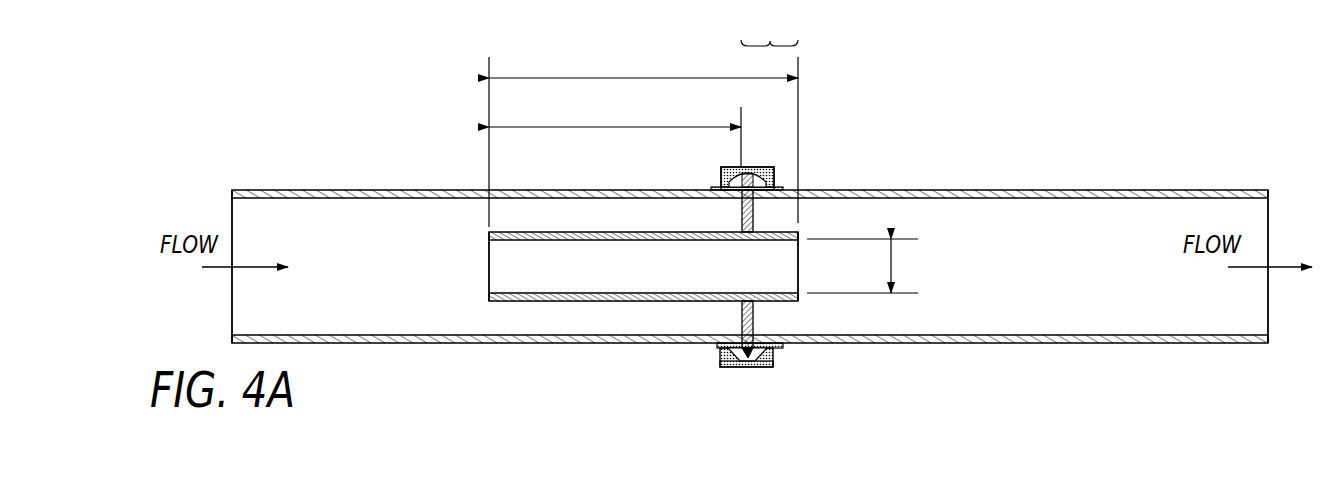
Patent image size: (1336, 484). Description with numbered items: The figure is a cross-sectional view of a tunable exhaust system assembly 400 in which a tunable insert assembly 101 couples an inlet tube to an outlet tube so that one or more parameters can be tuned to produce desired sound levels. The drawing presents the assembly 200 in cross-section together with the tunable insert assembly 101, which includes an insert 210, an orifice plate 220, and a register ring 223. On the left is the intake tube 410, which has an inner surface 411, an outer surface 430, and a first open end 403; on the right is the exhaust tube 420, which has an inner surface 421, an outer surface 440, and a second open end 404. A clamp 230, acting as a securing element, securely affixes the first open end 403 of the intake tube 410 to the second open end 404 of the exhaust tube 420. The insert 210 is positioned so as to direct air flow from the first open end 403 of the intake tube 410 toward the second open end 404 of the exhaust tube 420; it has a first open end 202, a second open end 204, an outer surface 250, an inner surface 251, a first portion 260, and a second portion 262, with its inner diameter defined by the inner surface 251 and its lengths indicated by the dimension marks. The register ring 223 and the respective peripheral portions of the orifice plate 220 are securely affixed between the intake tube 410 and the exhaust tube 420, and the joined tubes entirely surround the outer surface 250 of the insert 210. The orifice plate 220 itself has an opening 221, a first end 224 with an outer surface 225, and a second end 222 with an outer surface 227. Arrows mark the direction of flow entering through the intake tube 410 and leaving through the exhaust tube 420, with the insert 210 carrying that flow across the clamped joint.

The tunable insert assembly 101 is at (851, 305).
The assembly 200 is at (723, 168).
The first open end 202 is at (485, 255).
The second open end 204 is at (802, 262).
The insert 210 is at (540, 343).
The orifice plate 220 is at (723, 346).
The opening 221 is at (776, 314).
The second end 222 is at (769, 167).
The register ring 223 is at (743, 367).
The first end 224 is at (738, 313).
The outer surface of the first end 225 is at (741, 217).
The outer surface of the second end 227 is at (755, 217).
The clamp 230 is at (770, 368).
The outer surface 250 is at (554, 232).
The inner surface 251 is at (487, 281).
The first portion 260 is at (552, 127).
The second portion 262 is at (769, 28).
The tunable exhaust system assembly 400 is at (163, 108).
The first open end 403 is at (228, 218).
The second open end 404 is at (1272, 226).
The intake tube 410 is at (258, 190).
The inner surface 411 is at (277, 331).
The exhaust tube 420 is at (1167, 190).
The inner surface 421 is at (1200, 332).
The outer surface 430 is at (323, 190).
The outer surface 440 is at (1063, 190).